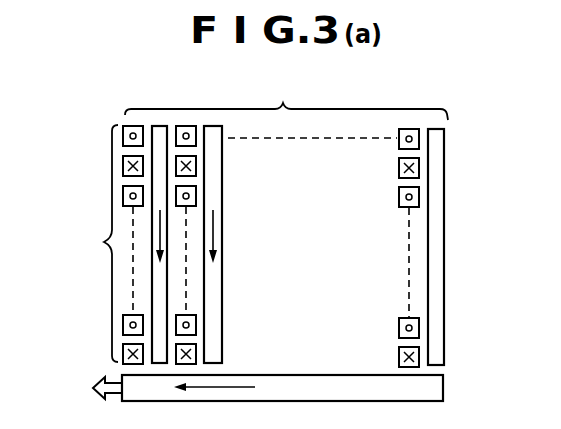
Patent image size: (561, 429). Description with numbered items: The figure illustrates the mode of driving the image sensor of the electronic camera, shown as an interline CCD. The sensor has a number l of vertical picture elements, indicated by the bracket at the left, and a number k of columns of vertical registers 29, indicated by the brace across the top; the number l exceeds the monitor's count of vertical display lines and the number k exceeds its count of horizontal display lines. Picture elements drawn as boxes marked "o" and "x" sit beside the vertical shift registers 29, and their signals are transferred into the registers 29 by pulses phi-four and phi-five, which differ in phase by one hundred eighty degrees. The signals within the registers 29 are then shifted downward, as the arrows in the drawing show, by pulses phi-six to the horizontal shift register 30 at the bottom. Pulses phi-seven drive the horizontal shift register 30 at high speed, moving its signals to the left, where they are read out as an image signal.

The number of columns of vertical registers k is at (286, 98).
The number of vertical picture elements l is at (101, 243).
The vertical shift registers 29 is at (428, 258).
The horizontal shift register 30 is at (308, 375).